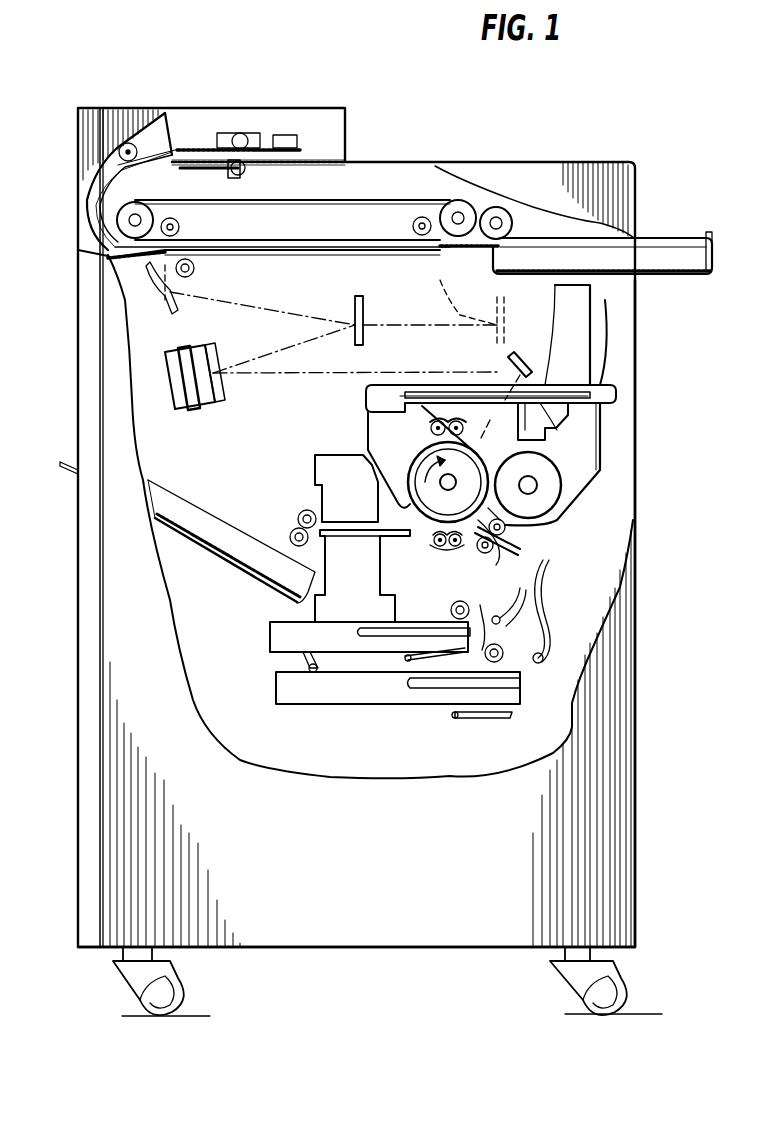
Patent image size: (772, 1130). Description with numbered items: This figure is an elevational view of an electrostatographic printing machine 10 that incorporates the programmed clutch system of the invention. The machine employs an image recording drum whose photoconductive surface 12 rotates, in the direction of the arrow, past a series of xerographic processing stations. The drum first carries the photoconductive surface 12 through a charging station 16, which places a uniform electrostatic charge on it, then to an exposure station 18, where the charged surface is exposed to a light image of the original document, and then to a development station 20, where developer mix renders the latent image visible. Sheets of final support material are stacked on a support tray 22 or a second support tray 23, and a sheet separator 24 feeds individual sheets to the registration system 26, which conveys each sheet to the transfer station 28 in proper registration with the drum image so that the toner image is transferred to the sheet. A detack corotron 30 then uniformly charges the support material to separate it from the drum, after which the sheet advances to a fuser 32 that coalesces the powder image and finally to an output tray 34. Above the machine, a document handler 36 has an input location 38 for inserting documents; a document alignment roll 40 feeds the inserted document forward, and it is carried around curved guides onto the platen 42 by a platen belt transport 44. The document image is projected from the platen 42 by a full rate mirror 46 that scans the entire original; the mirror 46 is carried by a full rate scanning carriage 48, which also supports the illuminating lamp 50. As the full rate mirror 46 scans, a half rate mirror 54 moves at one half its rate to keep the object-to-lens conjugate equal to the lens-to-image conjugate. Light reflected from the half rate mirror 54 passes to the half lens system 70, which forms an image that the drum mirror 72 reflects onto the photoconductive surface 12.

The electrostatographic printing machine 10 is at (662, 456).
The photoconductive surface 12 is at (415, 470).
The charging station 16 is at (428, 436).
The exposure station 18 is at (486, 440).
The development station 20 is at (548, 472).
The support tray 22 is at (270, 640).
The support tray 23 is at (275, 694).
The sheet separator 24 is at (472, 620).
The registration system 26 is at (512, 538).
The transfer station 28 is at (458, 548).
The detack corotron 30 is at (434, 548).
The fuser 32 is at (314, 460).
The output tray 34 is at (226, 536).
The document handler 36 is at (424, 122).
The input location 38 is at (346, 162).
The document alignment roll 40 is at (152, 167).
The platen 42 is at (388, 252).
The platen belt transport 44 is at (400, 200).
The full rate mirror 46 is at (160, 308).
The full rate scanning carriage 48 is at (95, 258).
The illuminating lamp 50 is at (196, 268).
The half rate mirror 54 is at (365, 325).
The half lens system 70 is at (220, 363).
The drum mirror 72 is at (519, 365).